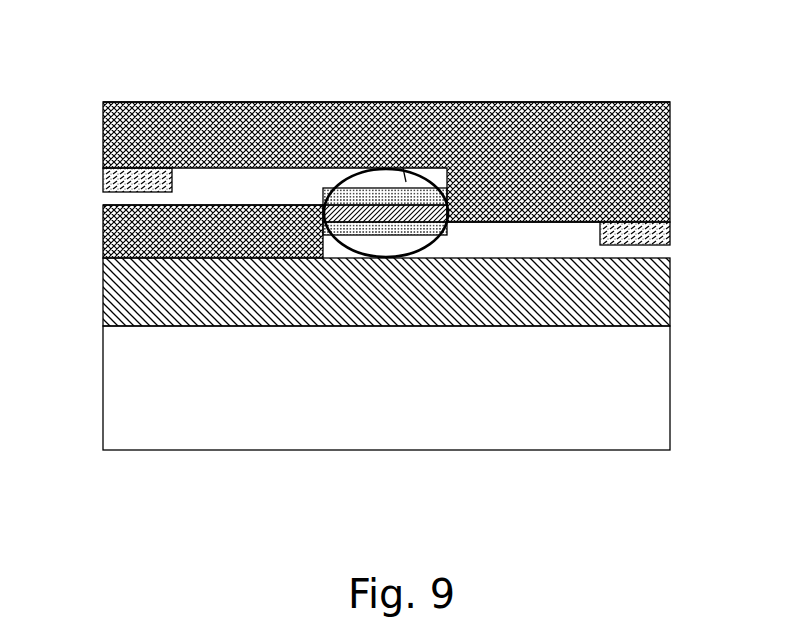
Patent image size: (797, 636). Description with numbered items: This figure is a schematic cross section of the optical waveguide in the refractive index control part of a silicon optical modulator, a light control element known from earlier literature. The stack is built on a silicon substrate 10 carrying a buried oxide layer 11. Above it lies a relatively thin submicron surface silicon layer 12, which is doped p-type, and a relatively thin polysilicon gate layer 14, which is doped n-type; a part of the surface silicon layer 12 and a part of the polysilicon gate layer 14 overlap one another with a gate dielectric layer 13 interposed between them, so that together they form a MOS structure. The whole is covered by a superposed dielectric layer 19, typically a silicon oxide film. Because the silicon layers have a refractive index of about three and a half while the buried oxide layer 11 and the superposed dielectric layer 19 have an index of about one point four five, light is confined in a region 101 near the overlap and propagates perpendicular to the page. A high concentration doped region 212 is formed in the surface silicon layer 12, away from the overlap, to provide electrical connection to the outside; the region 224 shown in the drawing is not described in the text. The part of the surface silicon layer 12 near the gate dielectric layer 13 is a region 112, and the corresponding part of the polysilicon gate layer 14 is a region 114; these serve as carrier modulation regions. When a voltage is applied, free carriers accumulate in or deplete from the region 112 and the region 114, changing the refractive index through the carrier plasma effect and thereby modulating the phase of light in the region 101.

The silicon substrate 10 is at (662, 382).
The buried oxide layer 11 is at (672, 303).
The surface silicon layer 12 is at (542, 244).
The gate dielectric layer 13 is at (330, 187).
The polysilicon gate layer 14 is at (225, 187).
The superposed dielectric layer 19 is at (672, 148).
The region 101 is at (453, 102).
The region 112 is at (420, 232).
The region 114 is at (370, 188).
The region 212 is at (672, 230).
The contact pad 224 is at (100, 175).